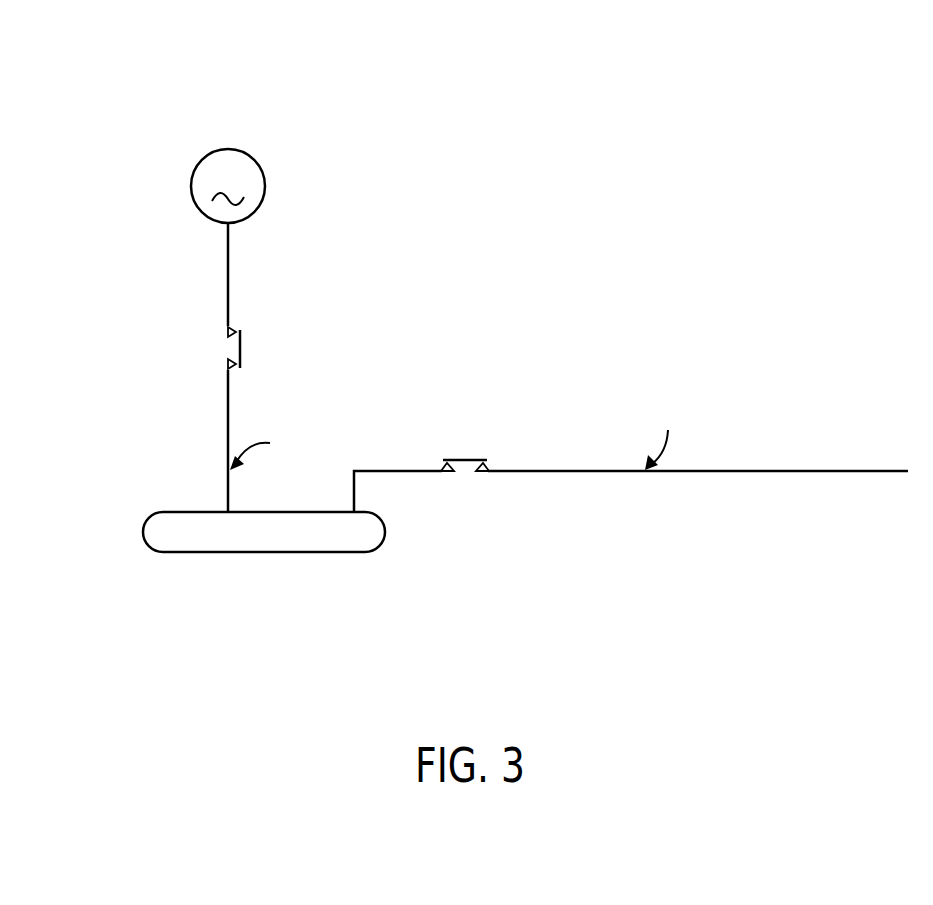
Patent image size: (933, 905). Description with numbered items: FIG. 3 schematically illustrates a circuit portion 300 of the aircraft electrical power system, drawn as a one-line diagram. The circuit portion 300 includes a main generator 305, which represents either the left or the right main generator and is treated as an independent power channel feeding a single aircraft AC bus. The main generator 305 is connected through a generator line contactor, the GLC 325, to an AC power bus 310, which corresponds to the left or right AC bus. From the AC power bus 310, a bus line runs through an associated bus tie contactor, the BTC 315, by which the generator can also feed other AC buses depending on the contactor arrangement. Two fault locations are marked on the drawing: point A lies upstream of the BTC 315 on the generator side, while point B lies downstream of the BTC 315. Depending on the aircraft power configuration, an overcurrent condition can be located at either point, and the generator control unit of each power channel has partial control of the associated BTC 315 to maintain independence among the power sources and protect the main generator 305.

The circuit portion 300 is at (146, 70).
The main generator 305 is at (190, 186).
The AC power bus 310 is at (265, 553).
The bus tie contactor (BTC) 315 is at (466, 474).
The generator line contactor (GLC) 325 is at (226, 346).